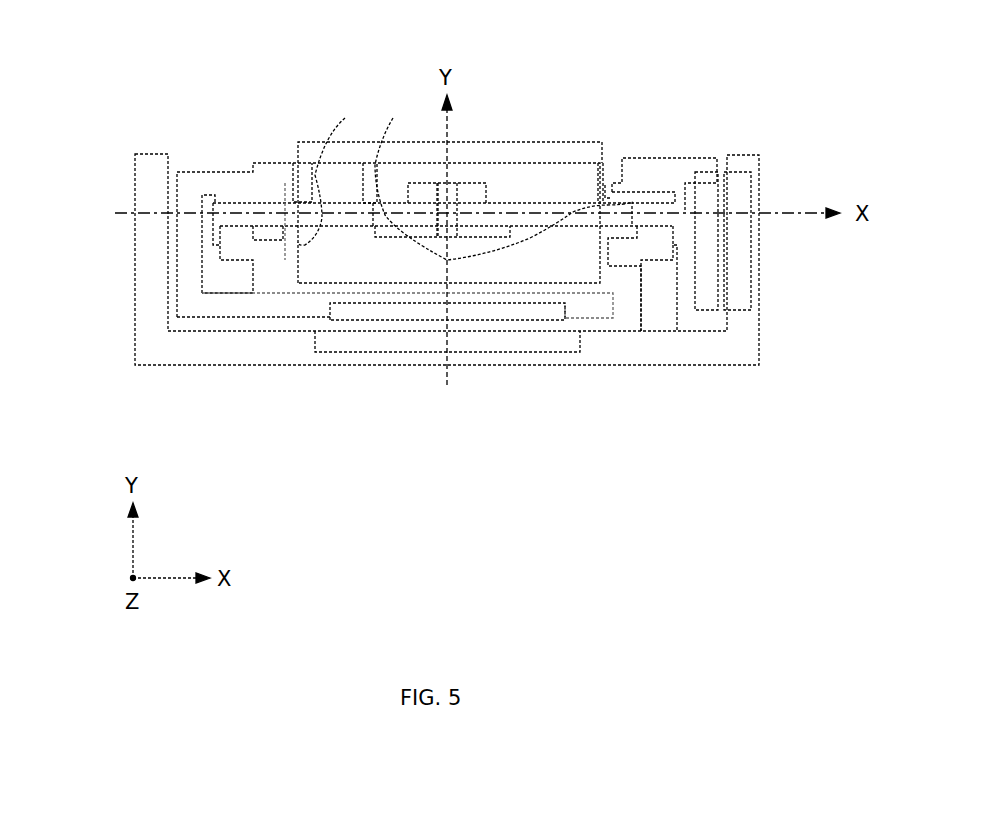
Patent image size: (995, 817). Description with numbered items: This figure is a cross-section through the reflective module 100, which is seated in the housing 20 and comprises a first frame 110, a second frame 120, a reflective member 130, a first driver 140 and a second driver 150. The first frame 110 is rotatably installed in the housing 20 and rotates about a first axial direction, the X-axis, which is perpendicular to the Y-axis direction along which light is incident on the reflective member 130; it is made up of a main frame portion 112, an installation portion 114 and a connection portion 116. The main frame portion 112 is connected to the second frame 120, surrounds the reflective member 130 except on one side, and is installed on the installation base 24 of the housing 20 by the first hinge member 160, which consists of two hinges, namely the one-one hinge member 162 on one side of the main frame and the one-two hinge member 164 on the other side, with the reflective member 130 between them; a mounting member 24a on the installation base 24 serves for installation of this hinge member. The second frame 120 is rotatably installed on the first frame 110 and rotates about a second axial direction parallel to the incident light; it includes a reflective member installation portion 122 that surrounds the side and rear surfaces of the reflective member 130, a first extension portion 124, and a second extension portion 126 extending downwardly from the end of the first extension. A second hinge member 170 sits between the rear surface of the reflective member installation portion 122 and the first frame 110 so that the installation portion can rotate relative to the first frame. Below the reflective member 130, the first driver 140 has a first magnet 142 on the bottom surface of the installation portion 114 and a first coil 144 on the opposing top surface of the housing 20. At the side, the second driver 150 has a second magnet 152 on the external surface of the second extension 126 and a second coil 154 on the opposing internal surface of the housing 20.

The housing 20 is at (703, 350).
The installation base 24 is at (647, 302).
The mounting member 24a is at (657, 245).
The reflective module 100 is at (706, 138).
The first frame 110 is at (70, 130).
The main frame portion 112 is at (293, 212).
The installation portion 114 is at (263, 305).
The connection portion 116 is at (185, 232).
The second frame 120 is at (697, 78).
The reflective member installation portion 122 is at (467, 177).
The first extension portion 124 is at (657, 168).
The second extension portion 126 is at (677, 180).
The reflective member 130 is at (485, 148).
The first driver 140 is at (437, 408).
The first magnet 142 is at (340, 307).
The first coil 144 is at (422, 340).
The second driver 150 is at (826, 140).
The second magnet 152 is at (708, 185).
The second coil 154 is at (740, 188).
The first hinge member 160 is at (412, 82).
The 1-1 hinge member 162 is at (498, 174).
The 1-2 hinge member 164 is at (329, 167).
The second hinge member 170 is at (437, 192).